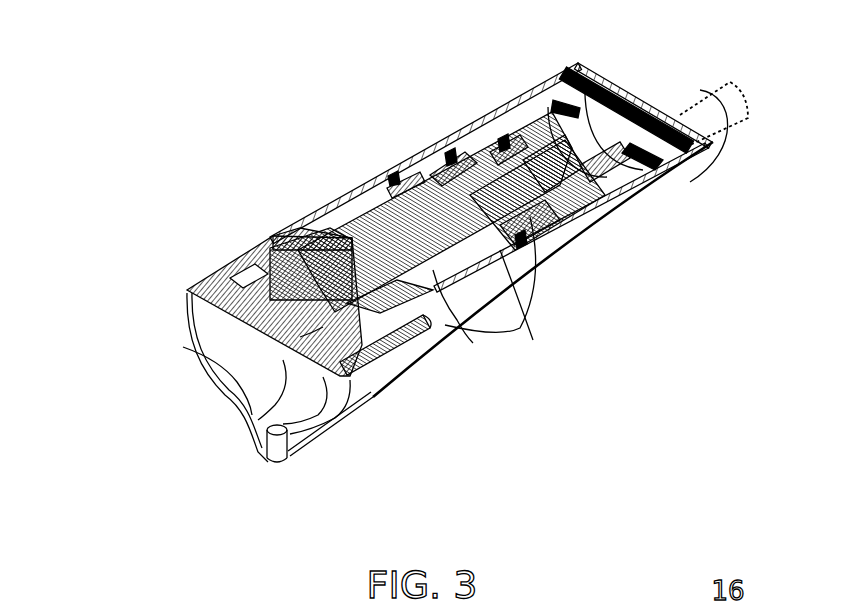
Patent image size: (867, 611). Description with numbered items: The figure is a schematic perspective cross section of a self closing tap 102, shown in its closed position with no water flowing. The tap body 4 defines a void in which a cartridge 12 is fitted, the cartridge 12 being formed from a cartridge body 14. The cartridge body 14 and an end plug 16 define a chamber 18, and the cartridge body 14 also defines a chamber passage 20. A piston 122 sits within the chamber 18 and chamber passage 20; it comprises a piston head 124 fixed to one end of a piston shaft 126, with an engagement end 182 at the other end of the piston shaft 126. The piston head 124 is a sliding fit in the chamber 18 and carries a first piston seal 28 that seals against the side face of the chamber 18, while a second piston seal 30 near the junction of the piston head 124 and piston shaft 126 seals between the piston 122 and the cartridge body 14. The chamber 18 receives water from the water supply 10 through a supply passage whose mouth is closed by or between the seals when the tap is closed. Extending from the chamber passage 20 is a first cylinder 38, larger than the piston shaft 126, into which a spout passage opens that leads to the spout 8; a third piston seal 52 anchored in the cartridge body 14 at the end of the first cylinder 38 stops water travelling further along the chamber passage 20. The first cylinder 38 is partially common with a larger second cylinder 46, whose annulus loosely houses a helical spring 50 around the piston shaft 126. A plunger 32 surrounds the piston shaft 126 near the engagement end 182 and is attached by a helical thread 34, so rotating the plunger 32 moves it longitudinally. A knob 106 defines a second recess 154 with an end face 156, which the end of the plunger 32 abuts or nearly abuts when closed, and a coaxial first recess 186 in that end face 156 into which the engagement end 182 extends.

The self closing tap 102 is at (310, 55).
The tap body 4 is at (660, 203).
The spout 8 is at (493, 332).
The water supply 10 is at (752, 115).
The cartridge 12 is at (567, 230).
The cartridge body 14 is at (450, 143).
The end plug 16 is at (603, 79).
The chamber 18 is at (643, 167).
The chamber passage 20 is at (310, 230).
The first piston seal 28 is at (593, 200).
The second piston seal 30 is at (480, 133).
The plunger 32 is at (364, 407).
The helical thread 34 is at (282, 238).
The first cylinder 38 is at (520, 227).
The second cylinder 46 is at (440, 273).
The helical spring 50 is at (343, 220).
The third piston seal 52 is at (380, 185).
The knob 106 is at (235, 412).
The piston 122 is at (525, 268).
The piston head 124 is at (503, 137).
The piston shaft 126 is at (420, 340).
The second recess 154 is at (283, 462).
The end face 156 is at (224, 268).
The engagement end 182 is at (183, 347).
The first recess 186 is at (323, 327).